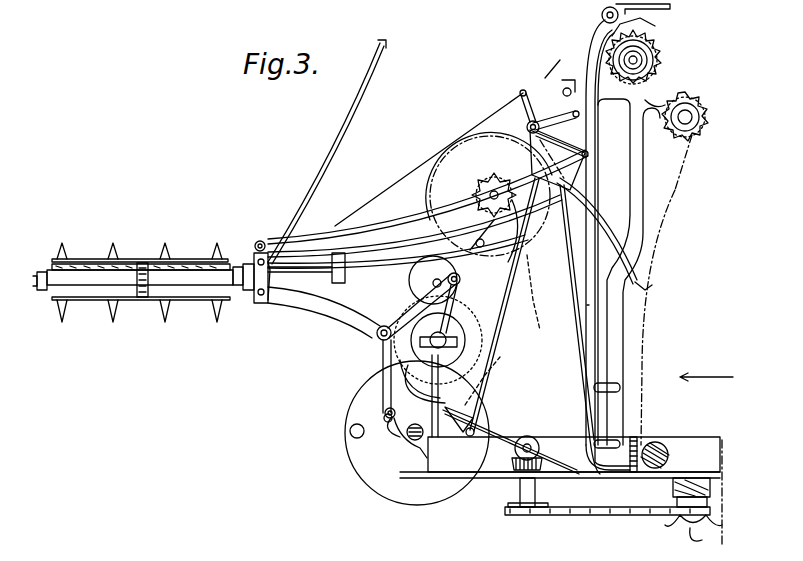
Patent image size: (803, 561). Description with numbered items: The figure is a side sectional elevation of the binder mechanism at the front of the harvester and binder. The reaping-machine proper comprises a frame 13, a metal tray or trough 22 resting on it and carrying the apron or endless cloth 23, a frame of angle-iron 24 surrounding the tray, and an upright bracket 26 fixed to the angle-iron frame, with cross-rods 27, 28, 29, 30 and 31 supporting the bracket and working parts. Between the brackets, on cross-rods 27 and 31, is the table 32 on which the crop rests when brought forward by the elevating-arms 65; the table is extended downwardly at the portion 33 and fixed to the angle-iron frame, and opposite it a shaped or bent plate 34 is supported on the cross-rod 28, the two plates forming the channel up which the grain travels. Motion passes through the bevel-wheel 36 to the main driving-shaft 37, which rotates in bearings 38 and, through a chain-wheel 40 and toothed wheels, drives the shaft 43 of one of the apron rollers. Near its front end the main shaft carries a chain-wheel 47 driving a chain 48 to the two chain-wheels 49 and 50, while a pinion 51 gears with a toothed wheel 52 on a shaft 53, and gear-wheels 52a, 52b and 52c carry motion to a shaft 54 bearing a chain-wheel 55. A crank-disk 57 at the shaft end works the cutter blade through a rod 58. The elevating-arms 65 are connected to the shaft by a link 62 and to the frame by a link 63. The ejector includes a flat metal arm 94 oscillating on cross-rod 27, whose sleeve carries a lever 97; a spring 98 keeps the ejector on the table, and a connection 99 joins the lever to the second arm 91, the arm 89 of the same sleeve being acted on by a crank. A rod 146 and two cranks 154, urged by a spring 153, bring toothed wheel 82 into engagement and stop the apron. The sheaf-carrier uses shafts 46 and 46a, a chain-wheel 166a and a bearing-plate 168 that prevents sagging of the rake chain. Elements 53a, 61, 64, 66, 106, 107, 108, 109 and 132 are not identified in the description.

The frame 13 is at (673, 490).
The metal tray or trough 22 is at (640, 441).
The apron or endless cloth 23 is at (686, 438).
The frame of angle-iron 24 is at (430, 478).
The upright bracket 26 is at (322, 312).
The cross-rod 27 is at (258, 241).
The cross-rod 28 is at (527, 126).
The cross-rod 29 is at (567, 87).
The cross-rod 30 is at (642, 62).
The cross-rod 31 is at (481, 216).
The table 32 is at (380, 240).
The extended portion of the table 33 is at (565, 320).
The shaped or bent plate 34 is at (596, 218).
The bevel-wheel 36 is at (648, 35).
The main driving-shaft 37 is at (403, 440).
The bearings 38 is at (412, 460).
The chain-wheel 40 is at (635, 190).
The shaft 43 is at (668, 455).
The horizontal shaft 46 is at (511, 326).
The shaft 46a is at (195, 286).
The chain-wheel 47 is at (440, 500).
The chain 48 is at (702, 148).
The chain-wheel 49 is at (532, 436).
The chain-wheel 50 is at (674, 136).
The pinion 51 is at (352, 438).
The toothed wheel 52 is at (384, 352).
The gear-wheel 52a is at (466, 350).
The gear-wheel 52b is at (362, 308).
The gear-wheel 52c is at (428, 200).
The shaft 53 is at (448, 333).
The channel post 53a is at (594, 170).
The shaft 54 is at (490, 190).
The chain-wheel 55 is at (533, 162).
The crank-disk 57 is at (380, 375).
The rod 58 is at (342, 418).
The lever 61 is at (428, 372).
The link 62 is at (530, 340).
The link 63 is at (386, 410).
The pivot 64 is at (383, 418).
The elevating-arms 65 is at (518, 228).
The path line 66 is at (643, 318).
The toothed wheel 82 is at (655, 55).
The arm 89 is at (560, 112).
The second arm 91 is at (551, 85).
The flat metal arm 94 is at (336, 130).
The lever 97 is at (272, 256).
The spring 98 is at (271, 306).
The connection 99 is at (420, 163).
The bracket 106 is at (580, 143).
The rod 107 is at (527, 268).
The link 108 is at (478, 420).
The link 109 is at (478, 410).
The sprocket 132 is at (687, 105).
The rod 146 is at (589, 305).
The spring 153 is at (622, 438).
The cranks 154 is at (621, 388).
The chain-wheel 166a is at (136, 300).
The bearing-plate 168 is at (92, 262).